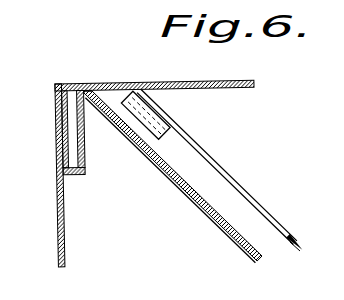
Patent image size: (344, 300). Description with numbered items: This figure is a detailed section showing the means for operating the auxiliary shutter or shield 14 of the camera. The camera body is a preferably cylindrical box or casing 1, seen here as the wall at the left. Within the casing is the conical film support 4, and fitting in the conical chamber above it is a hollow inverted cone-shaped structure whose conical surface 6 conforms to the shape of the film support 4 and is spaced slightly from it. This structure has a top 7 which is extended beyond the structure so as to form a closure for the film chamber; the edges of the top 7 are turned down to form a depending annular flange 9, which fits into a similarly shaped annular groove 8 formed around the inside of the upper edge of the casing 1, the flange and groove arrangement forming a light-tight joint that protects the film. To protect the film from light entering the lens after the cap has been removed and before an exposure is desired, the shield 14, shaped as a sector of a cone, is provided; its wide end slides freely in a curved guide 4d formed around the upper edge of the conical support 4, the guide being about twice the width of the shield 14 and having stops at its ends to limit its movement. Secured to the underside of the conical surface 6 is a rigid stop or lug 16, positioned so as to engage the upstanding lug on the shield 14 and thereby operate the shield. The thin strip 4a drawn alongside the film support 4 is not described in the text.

The box or casing 1 is at (57, 220).
The film support 4 is at (204, 215).
The thin strip along inclined strip 4a is at (137, 216).
The curved guide 4d is at (110, 76).
The conical surface 6 is at (255, 208).
The top 7 is at (200, 83).
The annular groove 8 is at (76, 150).
The depending annular flange 9 is at (59, 134).
The auxiliary shutter or shield 14 is at (244, 235).
The rigid stop or lug 16 is at (175, 130).